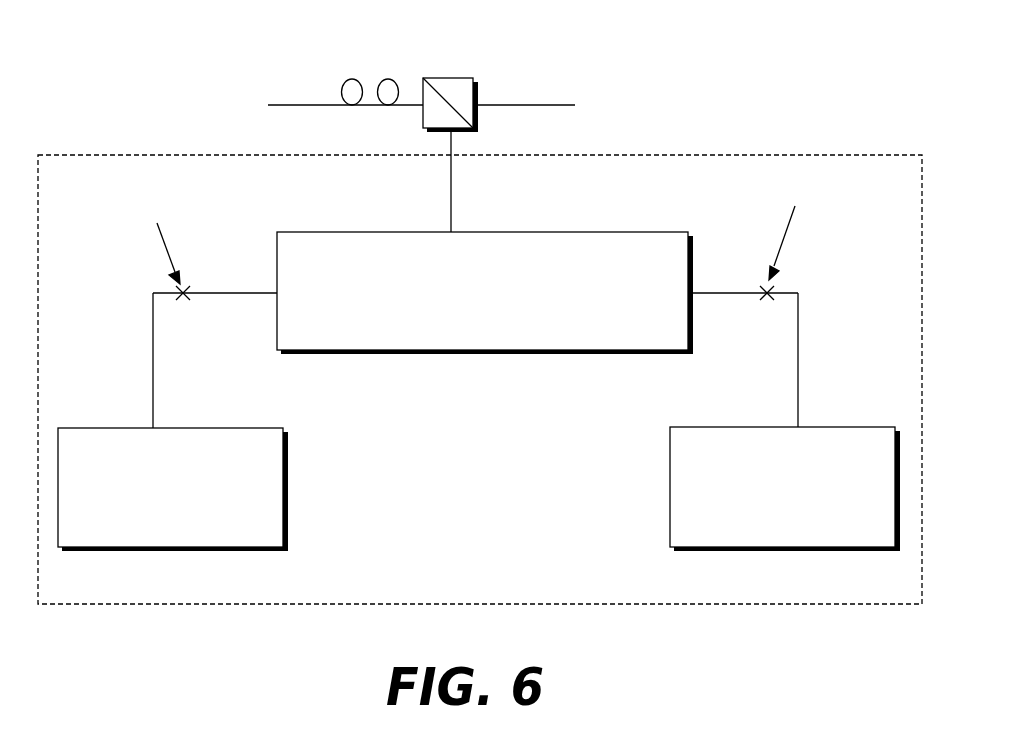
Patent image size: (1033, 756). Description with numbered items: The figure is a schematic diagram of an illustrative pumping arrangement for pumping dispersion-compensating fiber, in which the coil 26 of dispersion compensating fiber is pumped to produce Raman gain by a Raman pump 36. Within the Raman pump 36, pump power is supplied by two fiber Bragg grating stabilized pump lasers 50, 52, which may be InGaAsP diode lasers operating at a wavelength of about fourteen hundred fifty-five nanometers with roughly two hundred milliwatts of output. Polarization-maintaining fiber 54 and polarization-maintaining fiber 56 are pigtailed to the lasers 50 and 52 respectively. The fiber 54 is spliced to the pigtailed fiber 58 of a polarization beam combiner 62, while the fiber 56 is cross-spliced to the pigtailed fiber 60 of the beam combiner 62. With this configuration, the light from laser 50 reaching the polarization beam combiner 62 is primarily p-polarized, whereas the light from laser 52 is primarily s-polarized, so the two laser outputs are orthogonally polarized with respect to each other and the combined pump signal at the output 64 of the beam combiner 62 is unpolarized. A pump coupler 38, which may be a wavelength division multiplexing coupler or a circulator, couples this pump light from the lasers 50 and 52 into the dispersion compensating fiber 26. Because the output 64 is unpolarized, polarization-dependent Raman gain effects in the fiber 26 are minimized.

The coil 26 is at (408, 71).
The pump coupler 38 is at (473, 78).
The Raman pump 36 is at (753, 155).
The output 64 is at (451, 173).
The polarization beam combiner 62 is at (546, 355).
The pigtailed fiber 58 is at (258, 291).
The pigtailed fiber 60 is at (712, 291).
The polarization-maintaining fiber 54 is at (153, 374).
The polarization-maintaining fiber 56 is at (798, 337).
The pump laser 50 is at (288, 494).
The pump laser 52 is at (670, 520).